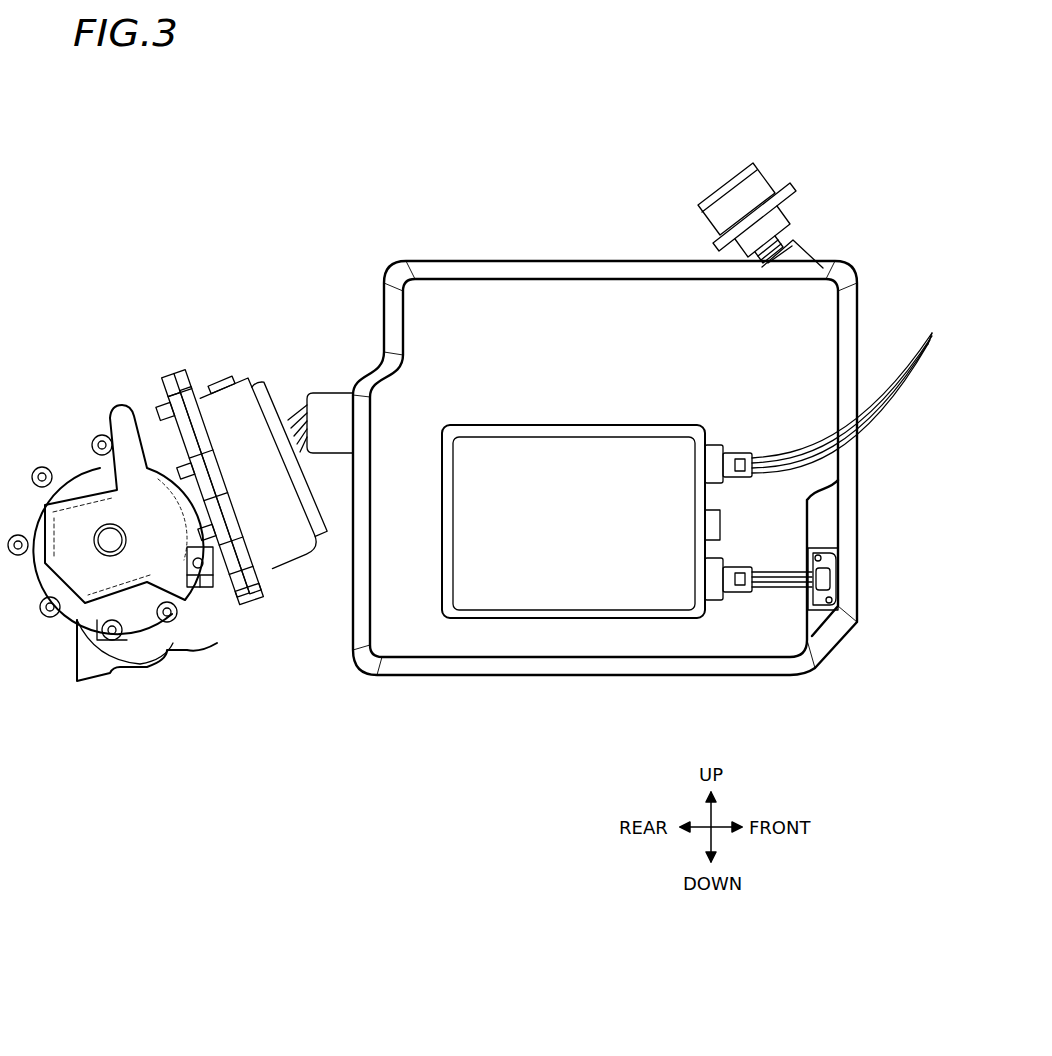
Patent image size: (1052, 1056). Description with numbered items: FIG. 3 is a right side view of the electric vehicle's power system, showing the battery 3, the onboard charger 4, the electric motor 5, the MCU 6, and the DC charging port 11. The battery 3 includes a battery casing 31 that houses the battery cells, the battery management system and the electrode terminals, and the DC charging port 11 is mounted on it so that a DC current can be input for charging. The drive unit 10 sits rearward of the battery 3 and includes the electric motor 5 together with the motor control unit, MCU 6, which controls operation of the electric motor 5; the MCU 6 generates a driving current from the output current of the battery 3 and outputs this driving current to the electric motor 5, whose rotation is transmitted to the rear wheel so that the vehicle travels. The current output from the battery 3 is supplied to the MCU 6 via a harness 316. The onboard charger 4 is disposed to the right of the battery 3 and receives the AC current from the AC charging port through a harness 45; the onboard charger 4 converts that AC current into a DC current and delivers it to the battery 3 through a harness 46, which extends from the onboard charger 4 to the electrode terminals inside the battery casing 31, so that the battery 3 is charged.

The battery 3 is at (622, 256).
The battery casing 31 is at (481, 272).
The onboard charger 4 is at (614, 600).
The electric motor 5 is at (74, 455).
The motor control unit (MCU) 6 is at (250, 390).
The drive unit 10 is at (114, 390).
The DC charging port 11 is at (719, 188).
The harness 45 is at (913, 354).
The harness 46 is at (797, 590).
The harness 316 is at (293, 422).